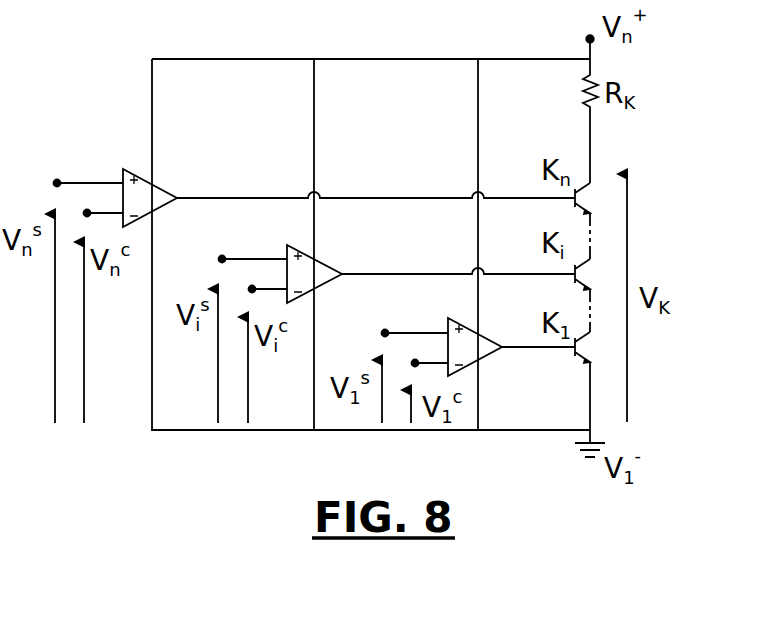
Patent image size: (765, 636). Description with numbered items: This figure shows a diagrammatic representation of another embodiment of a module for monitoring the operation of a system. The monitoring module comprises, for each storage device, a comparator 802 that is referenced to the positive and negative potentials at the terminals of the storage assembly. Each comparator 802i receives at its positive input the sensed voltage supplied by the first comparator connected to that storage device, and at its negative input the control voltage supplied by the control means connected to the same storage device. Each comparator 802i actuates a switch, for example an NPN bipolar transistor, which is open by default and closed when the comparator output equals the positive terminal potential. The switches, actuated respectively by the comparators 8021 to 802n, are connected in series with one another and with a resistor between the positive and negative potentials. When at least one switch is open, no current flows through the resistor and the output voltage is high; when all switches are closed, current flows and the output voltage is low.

The comparator 802 is at (315, 251).
The comparator 802n is at (133, 171).
The comparator 802i is at (298, 246).
The comparator 8021 is at (460, 320).